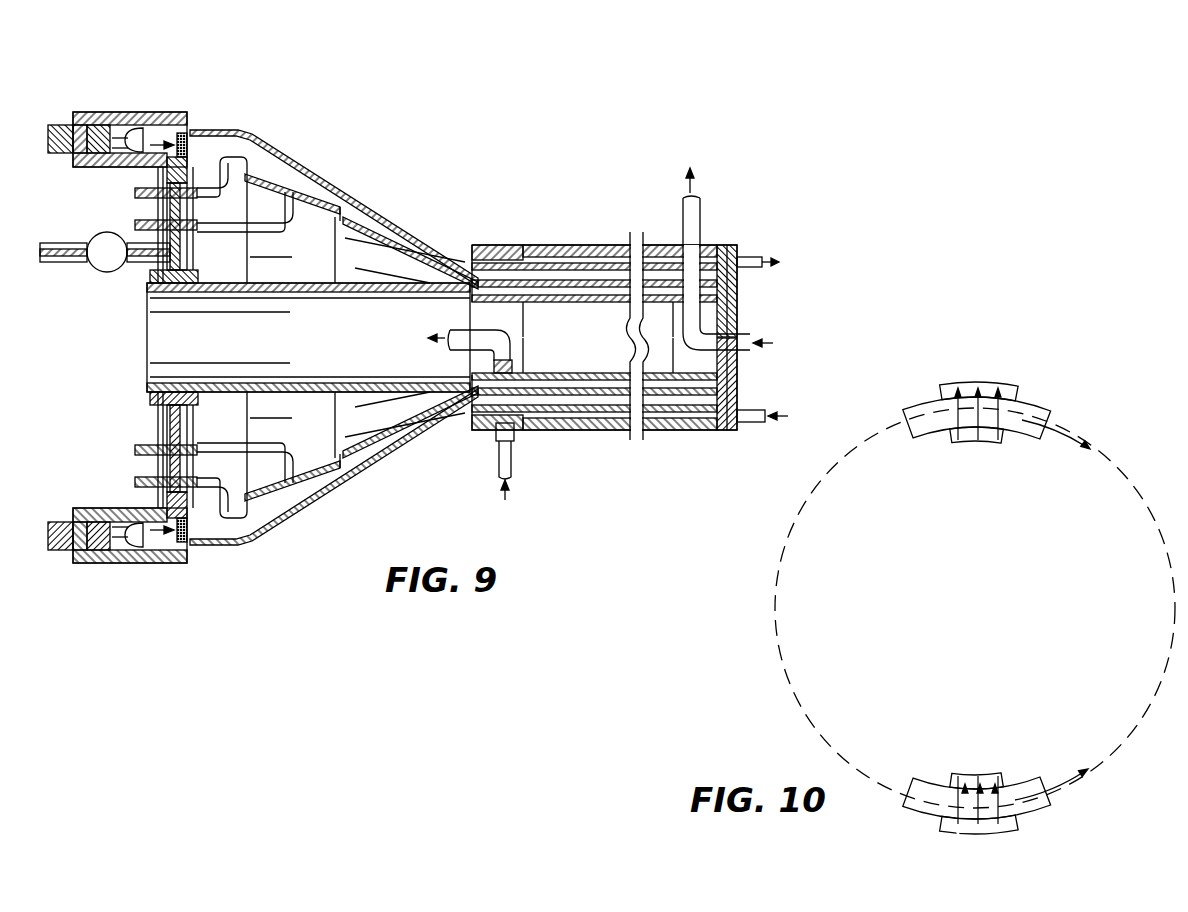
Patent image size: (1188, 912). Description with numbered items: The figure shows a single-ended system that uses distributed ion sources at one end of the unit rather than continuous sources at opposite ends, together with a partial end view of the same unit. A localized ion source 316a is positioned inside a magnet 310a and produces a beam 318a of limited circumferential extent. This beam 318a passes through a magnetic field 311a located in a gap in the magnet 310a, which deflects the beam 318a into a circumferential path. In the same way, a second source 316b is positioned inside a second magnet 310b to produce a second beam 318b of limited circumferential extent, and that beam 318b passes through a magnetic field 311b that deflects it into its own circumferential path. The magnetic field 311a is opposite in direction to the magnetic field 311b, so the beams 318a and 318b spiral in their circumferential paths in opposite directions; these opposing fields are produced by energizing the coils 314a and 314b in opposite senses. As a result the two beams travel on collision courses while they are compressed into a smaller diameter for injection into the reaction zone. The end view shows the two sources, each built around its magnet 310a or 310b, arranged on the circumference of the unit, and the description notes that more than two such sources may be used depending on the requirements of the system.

In FIG. 9, the magnet 310a is at (110, 112).
In FIG. 10, the magnet 310a is at (1007, 387).
In FIG. 9, the second magnet 310b is at (80, 563).
In FIG. 10, the second magnet 310b is at (998, 787).
In FIG. 9, the coil 314a is at (92, 135).
In FIG. 10, the coil 314a is at (923, 415).
In FIG. 9, the coil 314b is at (65, 518).
In FIG. 10, the coil 314b is at (935, 798).
In FIG. 9, the localized ion source 316a is at (133, 142).
In FIG. 9, the second source 316b is at (137, 547).
In FIG. 9, the beam 318a is at (152, 142).
In FIG. 10, the beam 318a is at (1077, 438).
In FIG. 9, the beam 318b is at (155, 533).
In FIG. 10, the beam 318b is at (1062, 785).
In FIG. 9, the magnetic field 311a is at (187, 142).
In FIG. 9, the magnetic field 311b is at (193, 528).